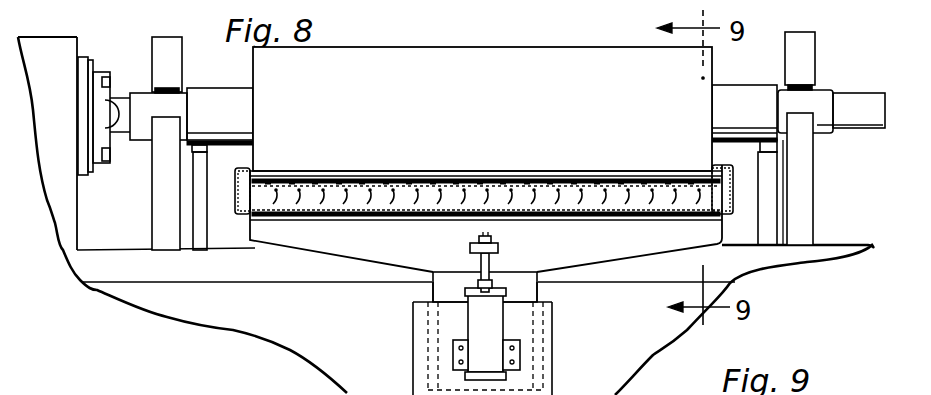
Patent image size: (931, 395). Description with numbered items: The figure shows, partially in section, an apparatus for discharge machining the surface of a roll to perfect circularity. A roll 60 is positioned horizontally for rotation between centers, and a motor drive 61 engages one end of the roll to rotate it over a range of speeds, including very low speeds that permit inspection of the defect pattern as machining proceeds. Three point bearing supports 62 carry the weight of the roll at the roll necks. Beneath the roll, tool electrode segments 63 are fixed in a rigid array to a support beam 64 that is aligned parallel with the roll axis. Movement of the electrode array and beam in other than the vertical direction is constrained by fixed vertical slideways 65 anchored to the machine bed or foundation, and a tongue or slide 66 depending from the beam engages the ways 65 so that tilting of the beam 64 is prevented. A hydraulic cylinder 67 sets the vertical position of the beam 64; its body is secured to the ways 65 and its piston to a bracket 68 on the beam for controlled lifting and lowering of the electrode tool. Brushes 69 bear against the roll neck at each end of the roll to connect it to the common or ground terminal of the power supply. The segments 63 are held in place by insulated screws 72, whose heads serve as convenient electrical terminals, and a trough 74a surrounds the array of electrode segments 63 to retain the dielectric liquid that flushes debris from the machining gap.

The roll 60 is at (530, 47).
The motor drive 61 is at (60, 52).
The three point bearing supports 62 is at (175, 62).
The tool electrode segments 63 is at (348, 187).
The support beam 64 is at (494, 194).
The vertical slideways 65 is at (432, 291).
The tongue or slide 66 is at (453, 281).
The hydraulic cylinder 67 is at (503, 318).
The bracket 68 is at (500, 246).
The brushes 69 is at (202, 144).
The insulated screws 72 is at (668, 183).
The trough 74a is at (232, 174).